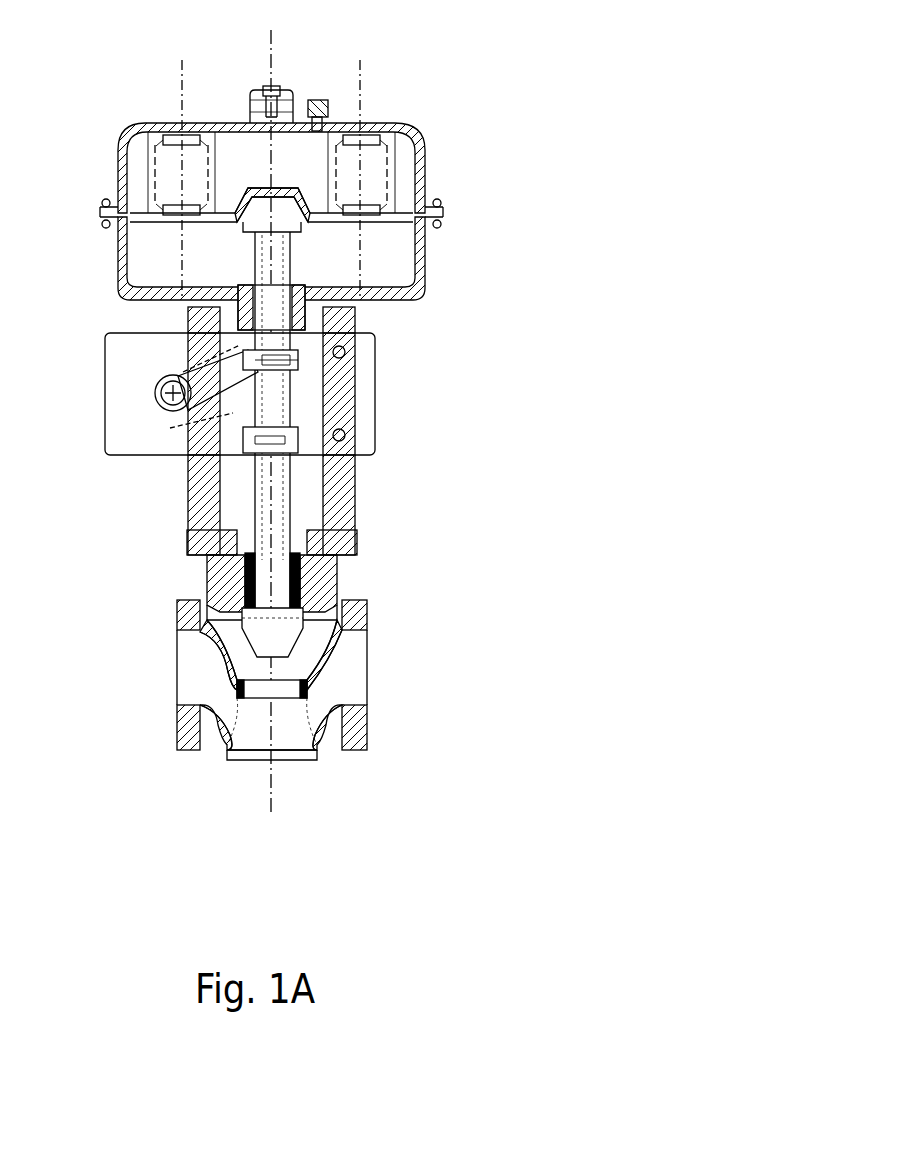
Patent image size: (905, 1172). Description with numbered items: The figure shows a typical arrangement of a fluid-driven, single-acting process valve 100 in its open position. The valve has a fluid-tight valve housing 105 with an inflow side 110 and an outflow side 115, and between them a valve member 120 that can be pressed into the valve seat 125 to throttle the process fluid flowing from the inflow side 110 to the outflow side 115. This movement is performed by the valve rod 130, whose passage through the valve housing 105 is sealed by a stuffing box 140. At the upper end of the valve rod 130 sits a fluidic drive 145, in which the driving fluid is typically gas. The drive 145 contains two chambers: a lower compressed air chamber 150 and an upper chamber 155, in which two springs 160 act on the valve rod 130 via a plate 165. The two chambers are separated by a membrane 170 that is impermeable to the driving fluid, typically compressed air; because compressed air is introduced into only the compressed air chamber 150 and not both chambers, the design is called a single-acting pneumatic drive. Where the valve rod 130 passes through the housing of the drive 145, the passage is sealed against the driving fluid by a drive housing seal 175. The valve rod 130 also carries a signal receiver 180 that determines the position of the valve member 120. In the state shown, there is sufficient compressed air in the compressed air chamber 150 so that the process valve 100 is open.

The process valve 100 is at (482, 100).
The valve housing 105 is at (318, 582).
The inflow side 110 is at (197, 680).
The outflow side 115 is at (348, 690).
The valve member 120 is at (282, 647).
The valve seat 125 is at (307, 690).
The valve rod 130 is at (280, 500).
The stuffing box 140 is at (243, 572).
The fluidic drive 145 is at (317, 204).
The compressed air chamber 150 is at (271, 258).
The upper chamber 155 is at (271, 156).
The springs 160 is at (172, 162).
The plate 165 is at (203, 218).
The membrane 170 is at (410, 172).
The drive housing seal 175 is at (297, 316).
The signal receiver 180 is at (210, 378).